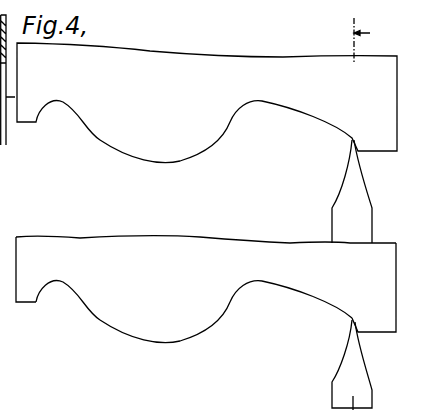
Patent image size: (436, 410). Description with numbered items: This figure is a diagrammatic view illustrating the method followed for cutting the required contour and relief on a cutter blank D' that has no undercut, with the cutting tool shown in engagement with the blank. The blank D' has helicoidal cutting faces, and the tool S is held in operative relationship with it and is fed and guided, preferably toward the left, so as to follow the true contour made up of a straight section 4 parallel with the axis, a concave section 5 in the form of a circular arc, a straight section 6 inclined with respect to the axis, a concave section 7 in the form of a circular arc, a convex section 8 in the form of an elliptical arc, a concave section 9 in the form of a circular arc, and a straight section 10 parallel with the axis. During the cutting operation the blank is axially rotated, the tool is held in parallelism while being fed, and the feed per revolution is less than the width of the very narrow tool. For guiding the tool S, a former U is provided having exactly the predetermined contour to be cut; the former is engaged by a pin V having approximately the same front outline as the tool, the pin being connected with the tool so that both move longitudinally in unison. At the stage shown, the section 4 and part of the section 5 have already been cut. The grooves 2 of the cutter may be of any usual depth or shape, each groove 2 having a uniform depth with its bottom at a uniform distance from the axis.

The groove 2 is at (6, 130).
The straight section 4 is at (388, 333).
The concave section 5 is at (345, 312).
The straight section 6 is at (292, 308).
The concave section 7 is at (240, 288).
The convex section 8 is at (173, 343).
The concave section 9 is at (63, 283).
The straight section 10 is at (24, 302).
The former U is at (288, 62).
The pin V is at (345, 213).
The tool S is at (342, 390).
The cutter blank D' is at (206, 223).